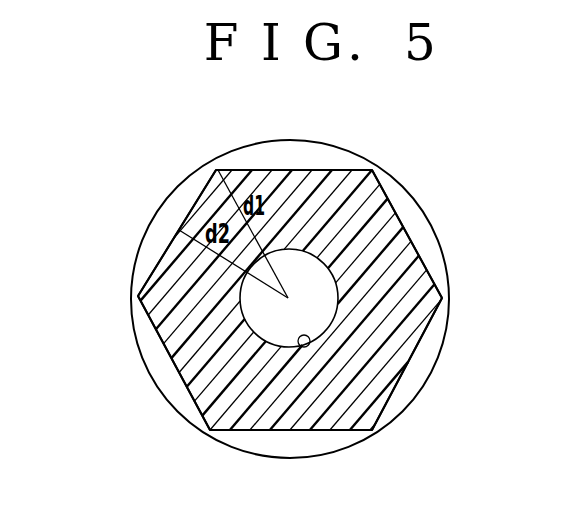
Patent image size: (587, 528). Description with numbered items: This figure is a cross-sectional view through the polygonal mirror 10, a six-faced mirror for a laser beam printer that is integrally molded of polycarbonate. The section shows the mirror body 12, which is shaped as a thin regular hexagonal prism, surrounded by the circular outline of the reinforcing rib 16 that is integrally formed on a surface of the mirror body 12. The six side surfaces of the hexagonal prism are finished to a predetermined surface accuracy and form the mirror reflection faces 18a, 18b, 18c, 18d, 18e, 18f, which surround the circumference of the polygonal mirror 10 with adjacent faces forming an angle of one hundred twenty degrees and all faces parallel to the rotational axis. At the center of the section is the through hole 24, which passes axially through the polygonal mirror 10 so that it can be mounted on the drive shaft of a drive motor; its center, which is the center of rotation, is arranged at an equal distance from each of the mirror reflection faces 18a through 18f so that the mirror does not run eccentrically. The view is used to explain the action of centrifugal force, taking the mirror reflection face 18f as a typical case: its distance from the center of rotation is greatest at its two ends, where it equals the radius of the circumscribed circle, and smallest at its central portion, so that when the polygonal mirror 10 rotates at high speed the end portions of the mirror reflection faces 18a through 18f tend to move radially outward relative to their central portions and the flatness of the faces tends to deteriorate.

The polygonal mirror 10 is at (393, 172).
The mirror body 12 is at (327, 182).
The reinforcing rib 16 is at (397, 403).
The mirror reflection face 18a is at (172, 373).
The mirror reflection face 18b is at (285, 430).
The mirror reflection face 18c is at (400, 373).
The mirror reflection face 18d is at (407, 233).
The mirror reflection face 18e is at (283, 170).
The mirror reflection face 18f is at (152, 270).
The through hole 24 is at (312, 340).